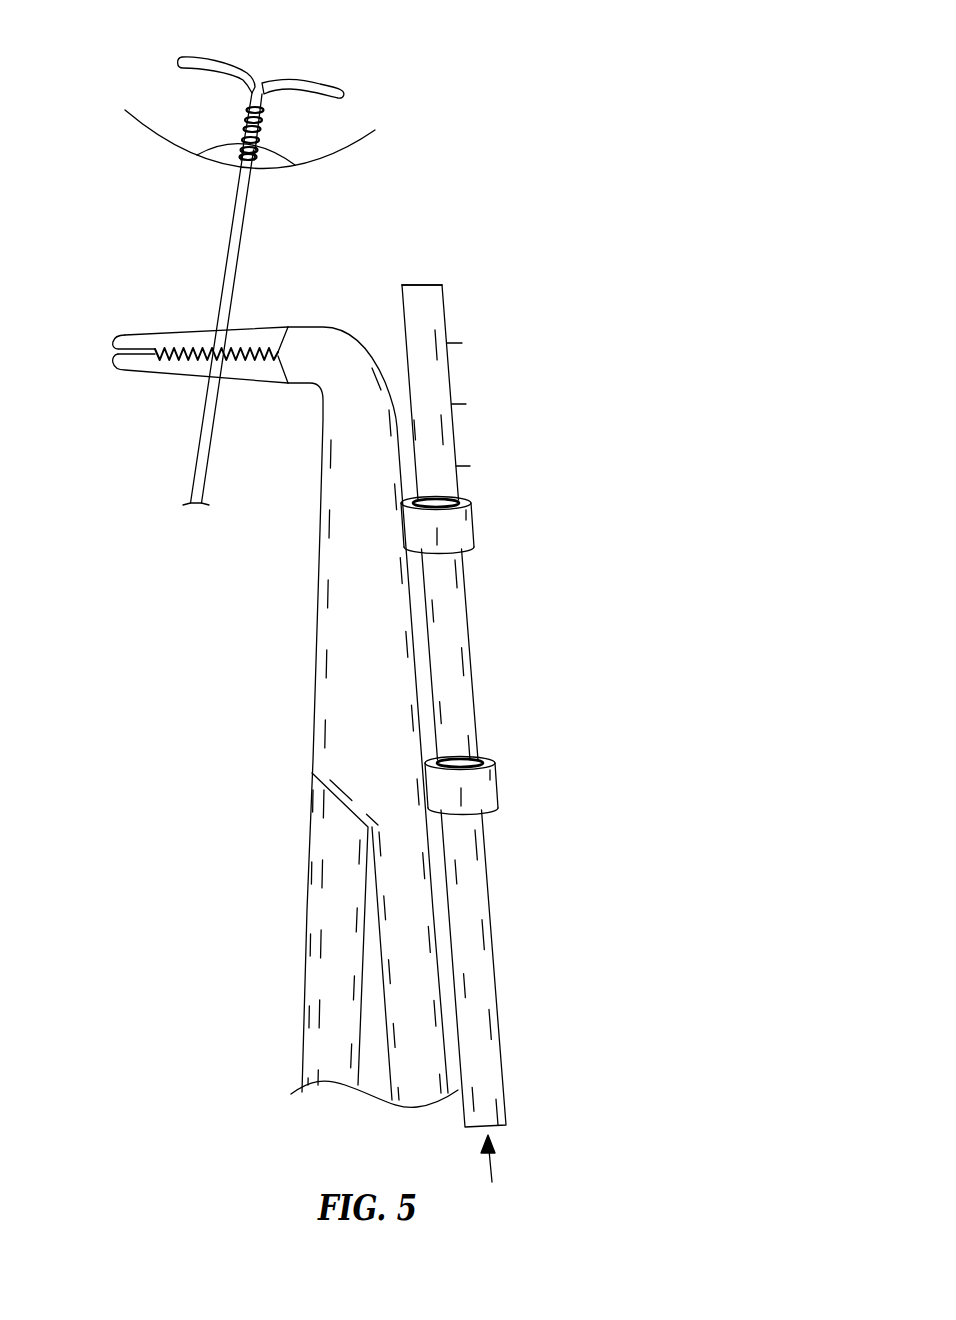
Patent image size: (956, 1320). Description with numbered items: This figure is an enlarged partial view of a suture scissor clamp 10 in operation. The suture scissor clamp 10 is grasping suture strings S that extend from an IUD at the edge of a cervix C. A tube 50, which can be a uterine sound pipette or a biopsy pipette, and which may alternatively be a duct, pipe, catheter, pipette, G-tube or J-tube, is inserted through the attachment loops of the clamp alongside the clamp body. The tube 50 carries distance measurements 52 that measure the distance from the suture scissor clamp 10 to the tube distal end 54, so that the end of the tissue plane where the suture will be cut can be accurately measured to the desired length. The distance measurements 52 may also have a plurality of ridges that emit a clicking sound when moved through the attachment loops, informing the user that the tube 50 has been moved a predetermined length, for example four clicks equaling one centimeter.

The element IUD is at (287, 82).
The cervix C is at (152, 138).
The suture strings S is at (220, 287).
The suture scissor clamp 10 is at (578, 137).
The tube 50 is at (473, 873).
The distance measurements 52 is at (540, 327).
The tube distal end 54 is at (420, 283).